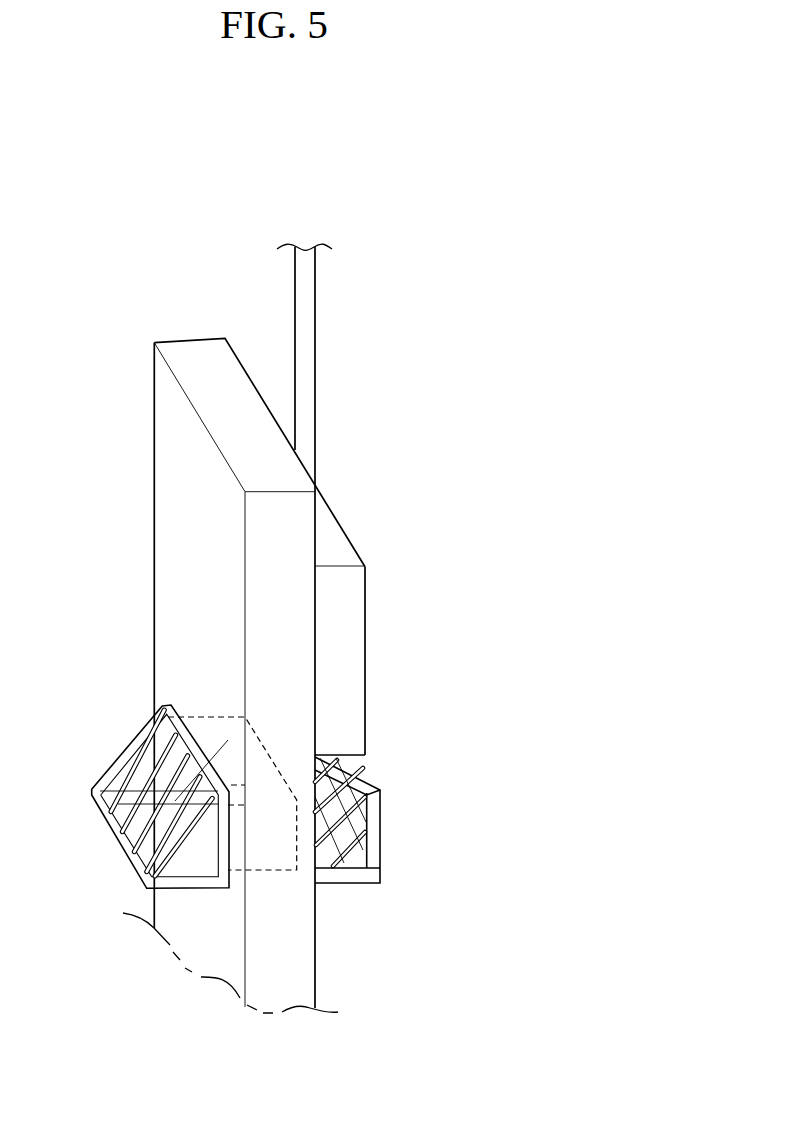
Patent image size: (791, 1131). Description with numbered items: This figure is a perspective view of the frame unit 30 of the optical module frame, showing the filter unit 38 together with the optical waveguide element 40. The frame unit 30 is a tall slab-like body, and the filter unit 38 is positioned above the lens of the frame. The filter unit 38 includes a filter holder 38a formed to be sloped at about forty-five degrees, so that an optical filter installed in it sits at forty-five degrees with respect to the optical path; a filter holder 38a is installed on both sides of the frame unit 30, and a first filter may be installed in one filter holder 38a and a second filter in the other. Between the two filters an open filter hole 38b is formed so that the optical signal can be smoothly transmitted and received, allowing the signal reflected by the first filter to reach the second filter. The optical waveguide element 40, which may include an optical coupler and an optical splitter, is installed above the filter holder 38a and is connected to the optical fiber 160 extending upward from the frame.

The frame unit 30 is at (172, 557).
The optical fiber 160 is at (305, 343).
The optical waveguide element 40 is at (350, 632).
The filter unit 38 is at (104, 741).
The filter holder 38a is at (100, 813).
The filter hole 38b is at (207, 827).